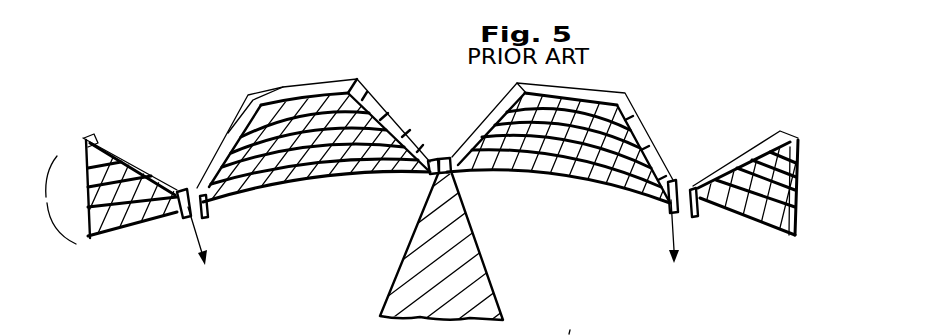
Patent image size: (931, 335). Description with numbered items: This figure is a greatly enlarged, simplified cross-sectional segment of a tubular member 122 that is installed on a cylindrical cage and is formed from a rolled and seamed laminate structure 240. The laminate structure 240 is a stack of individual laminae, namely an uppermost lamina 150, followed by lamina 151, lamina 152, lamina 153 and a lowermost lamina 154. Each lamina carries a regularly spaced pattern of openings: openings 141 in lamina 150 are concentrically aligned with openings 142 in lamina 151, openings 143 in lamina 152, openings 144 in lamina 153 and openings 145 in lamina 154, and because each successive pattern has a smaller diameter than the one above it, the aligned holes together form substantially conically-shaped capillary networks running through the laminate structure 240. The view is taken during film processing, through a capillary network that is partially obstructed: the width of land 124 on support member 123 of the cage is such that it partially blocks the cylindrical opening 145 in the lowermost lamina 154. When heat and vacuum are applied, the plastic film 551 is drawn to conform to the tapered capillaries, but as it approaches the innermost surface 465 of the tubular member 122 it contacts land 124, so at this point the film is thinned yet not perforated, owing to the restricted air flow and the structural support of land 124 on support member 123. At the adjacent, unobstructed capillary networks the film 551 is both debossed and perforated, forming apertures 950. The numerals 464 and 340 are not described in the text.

The tubular member 122 is at (152, 82).
The panel rim 464 is at (285, 88).
The film 551 is at (297, 92).
The innermost surface 465 is at (296, 182).
The openings 141 is at (367, 88).
The openings 142 is at (379, 112).
The openings 143 is at (394, 130).
The openings 144 is at (420, 152).
The cylindrical opening 145 is at (437, 157).
The land 124 is at (462, 176).
The support member 123 is at (470, 260).
The lamina 150 is at (86, 152).
The lamina 151 is at (113, 158).
The lamina 152 is at (122, 183).
The lamina 153 is at (118, 212).
The lamina 154 is at (146, 215).
The laminate structure 240 is at (45, 210).
The apertures 950 is at (199, 208).
The base 340 is at (570, 320).